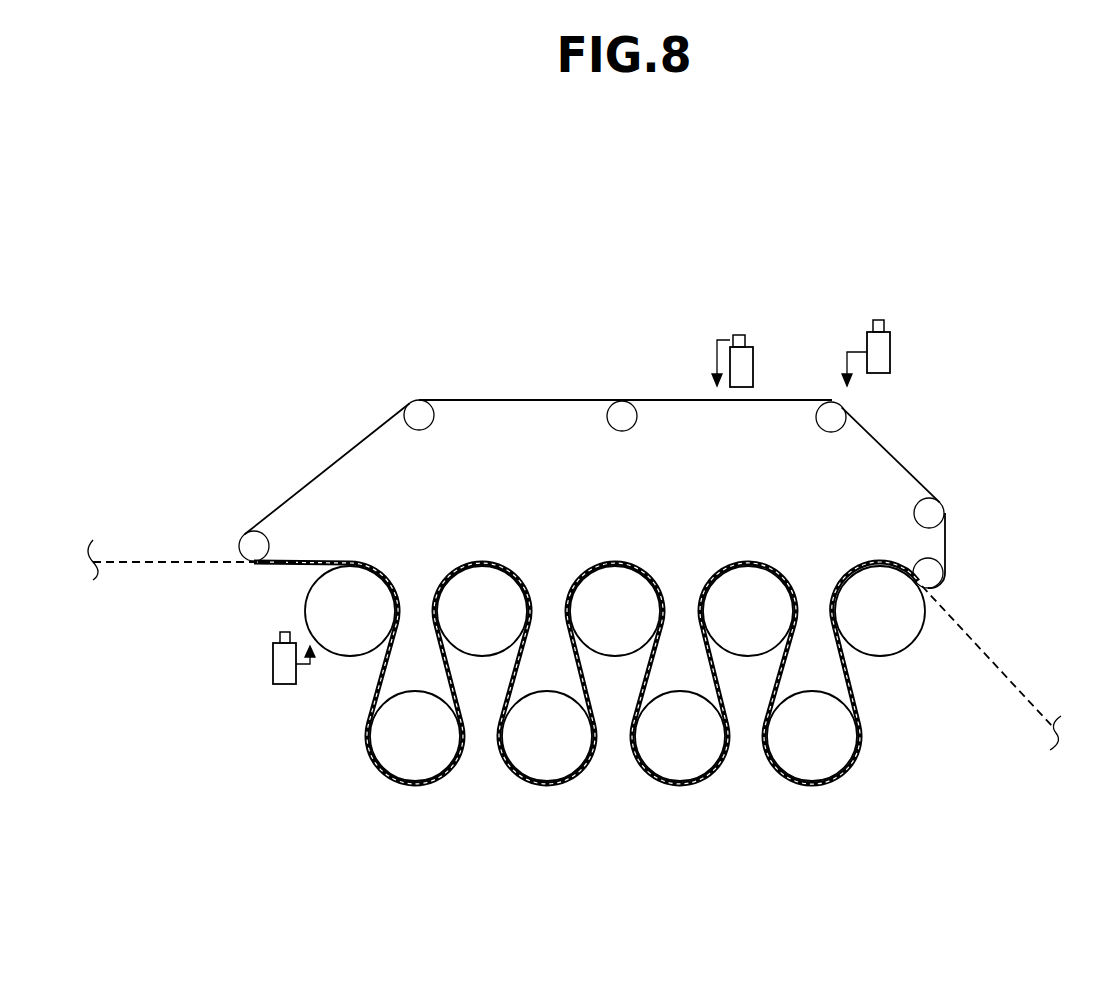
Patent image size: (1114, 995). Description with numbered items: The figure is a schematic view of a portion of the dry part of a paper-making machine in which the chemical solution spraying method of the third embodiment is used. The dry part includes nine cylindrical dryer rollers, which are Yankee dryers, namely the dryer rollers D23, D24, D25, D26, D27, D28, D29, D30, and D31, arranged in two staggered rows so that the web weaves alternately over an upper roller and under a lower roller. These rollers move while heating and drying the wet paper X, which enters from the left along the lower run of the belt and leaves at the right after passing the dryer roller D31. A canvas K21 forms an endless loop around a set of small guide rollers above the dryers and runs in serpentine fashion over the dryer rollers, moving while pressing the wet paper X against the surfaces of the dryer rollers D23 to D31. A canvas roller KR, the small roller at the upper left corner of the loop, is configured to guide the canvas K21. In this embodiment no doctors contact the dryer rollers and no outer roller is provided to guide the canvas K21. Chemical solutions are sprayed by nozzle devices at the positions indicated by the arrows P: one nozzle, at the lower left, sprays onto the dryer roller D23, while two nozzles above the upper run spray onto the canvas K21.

The canvas K21 is at (532, 398).
The canvas roller KR is at (418, 401).
The wet paper X is at (158, 562).
The arrows indicating spraying positions P is at (581, 508).
The dryer roller D23 is at (321, 624).
The dryer roller D24 is at (386, 750).
The dryer roller D25 is at (453, 624).
The dryer roller D26 is at (518, 750).
The dryer roller D27 is at (586, 624).
The dryer roller D28 is at (651, 750).
The dryer roller D29 is at (719, 624).
The dryer roller D30 is at (783, 750).
The dryer roller D31 is at (851, 624).